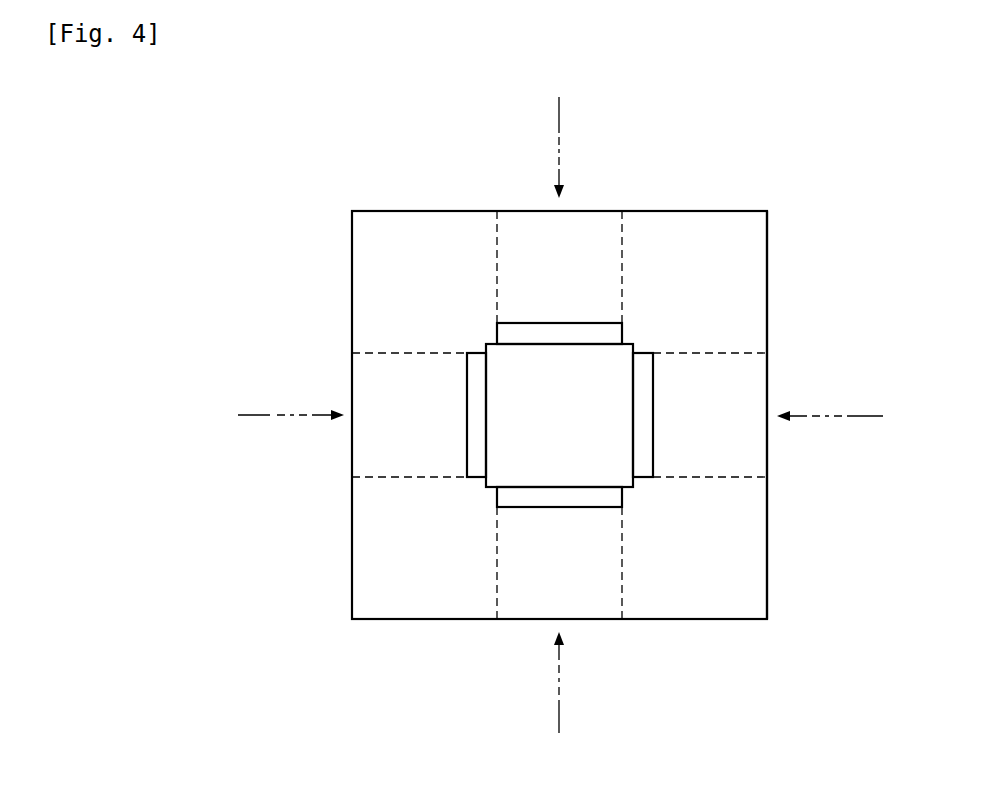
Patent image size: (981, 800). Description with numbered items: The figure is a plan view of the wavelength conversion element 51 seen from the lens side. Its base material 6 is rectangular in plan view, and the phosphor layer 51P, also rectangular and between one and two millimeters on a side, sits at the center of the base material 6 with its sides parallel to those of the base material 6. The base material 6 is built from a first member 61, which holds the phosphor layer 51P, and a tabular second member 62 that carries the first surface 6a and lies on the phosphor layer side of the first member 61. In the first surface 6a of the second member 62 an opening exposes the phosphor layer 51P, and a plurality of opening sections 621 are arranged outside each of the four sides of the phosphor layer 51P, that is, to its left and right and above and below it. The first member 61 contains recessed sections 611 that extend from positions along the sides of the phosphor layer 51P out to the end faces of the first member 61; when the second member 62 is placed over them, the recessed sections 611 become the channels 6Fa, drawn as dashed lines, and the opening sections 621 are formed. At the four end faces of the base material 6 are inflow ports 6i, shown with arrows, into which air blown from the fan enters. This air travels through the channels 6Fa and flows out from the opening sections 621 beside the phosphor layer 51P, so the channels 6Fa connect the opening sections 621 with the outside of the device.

The wavelength conversion element 51 is at (814, 166).
The phosphor layer 51P is at (613, 370).
The base material 6 is at (687, 211).
The first surface 6a is at (767, 287).
The second member 62 is at (831, 415).
The first member 61 is at (559, 544).
The recessed section 611 is at (687, 472).
The opening section 621 is at (475, 373).
The channel 6Fa is at (508, 230).
The inflow port 6i is at (598, 202).